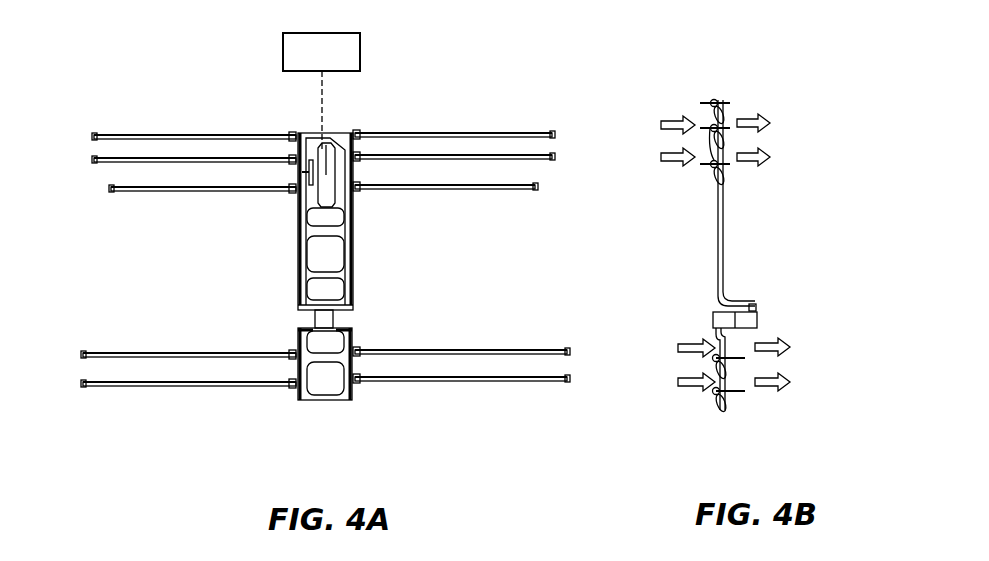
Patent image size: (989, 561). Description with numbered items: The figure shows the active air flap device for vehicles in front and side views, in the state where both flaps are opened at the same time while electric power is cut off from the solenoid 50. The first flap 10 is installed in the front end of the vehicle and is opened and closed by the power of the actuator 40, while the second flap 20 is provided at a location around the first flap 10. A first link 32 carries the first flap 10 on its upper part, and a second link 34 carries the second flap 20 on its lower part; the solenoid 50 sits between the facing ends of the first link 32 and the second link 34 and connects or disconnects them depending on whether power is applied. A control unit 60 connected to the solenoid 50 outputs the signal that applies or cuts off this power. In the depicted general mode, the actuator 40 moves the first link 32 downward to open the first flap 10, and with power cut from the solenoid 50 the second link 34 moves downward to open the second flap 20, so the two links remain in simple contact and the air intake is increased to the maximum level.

In FIG. 4A, the first flap 10 is at (180, 190).
In FIG. 4B, the first flap 10 is at (712, 155).
In FIG. 4A, the second flap 20 is at (183, 358).
In FIG. 4B, the second flap 20 is at (735, 360).
In FIG. 4A, the first link 32 is at (355, 244).
In FIG. 4B, the first link 32 is at (724, 243).
In FIG. 4A, the second link 34 is at (355, 335).
In FIG. 4B, the second link 34 is at (716, 330).
In FIG. 4A, the actuator 40 is at (335, 130).
In FIG. 4A, the solenoid 50 is at (300, 325).
In FIG. 4B, the solenoid 50 is at (760, 317).
In FIG. 4A, the control unit 60 is at (360, 50).